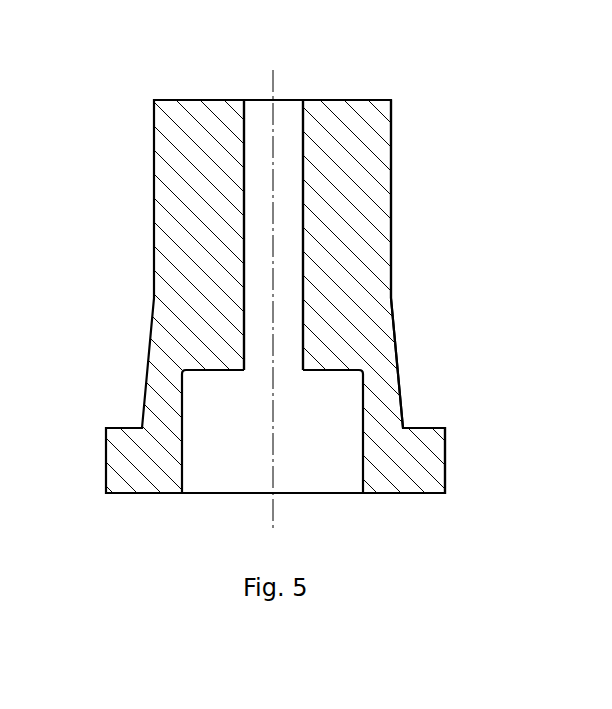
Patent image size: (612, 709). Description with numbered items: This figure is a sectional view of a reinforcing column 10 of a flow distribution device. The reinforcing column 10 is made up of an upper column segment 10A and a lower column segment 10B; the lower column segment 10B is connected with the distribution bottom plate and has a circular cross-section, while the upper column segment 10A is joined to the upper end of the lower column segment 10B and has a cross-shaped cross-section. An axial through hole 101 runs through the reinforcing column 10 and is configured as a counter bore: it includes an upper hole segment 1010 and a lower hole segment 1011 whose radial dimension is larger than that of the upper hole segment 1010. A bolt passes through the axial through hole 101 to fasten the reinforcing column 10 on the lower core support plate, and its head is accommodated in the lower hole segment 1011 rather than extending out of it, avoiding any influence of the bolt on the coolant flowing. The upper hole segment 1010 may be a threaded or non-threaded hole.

The reinforcing column 10 is at (306, 298).
The upper column segment 10A is at (360, 252).
The lower column segment 10B is at (398, 457).
The axial through hole 101 is at (199, 298).
The upper hole segment 1010 is at (260, 312).
The lower hole segment 1011 is at (243, 452).